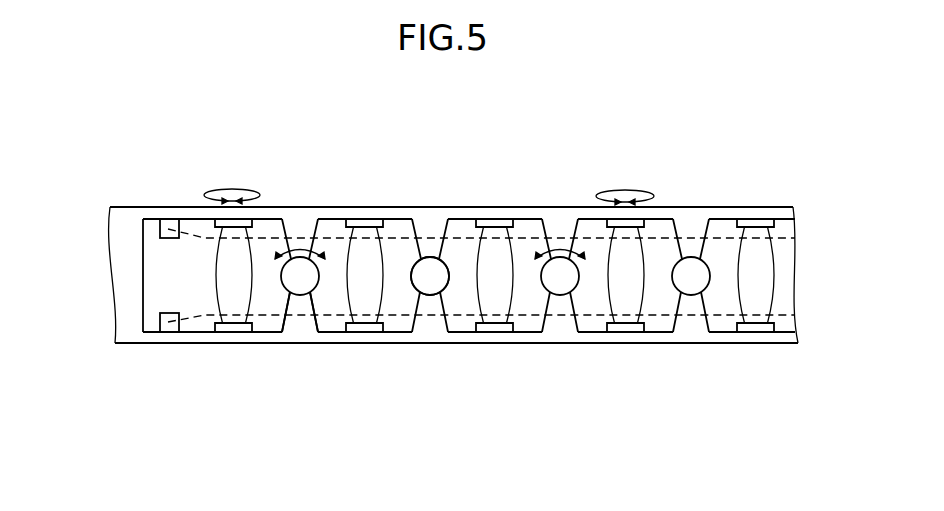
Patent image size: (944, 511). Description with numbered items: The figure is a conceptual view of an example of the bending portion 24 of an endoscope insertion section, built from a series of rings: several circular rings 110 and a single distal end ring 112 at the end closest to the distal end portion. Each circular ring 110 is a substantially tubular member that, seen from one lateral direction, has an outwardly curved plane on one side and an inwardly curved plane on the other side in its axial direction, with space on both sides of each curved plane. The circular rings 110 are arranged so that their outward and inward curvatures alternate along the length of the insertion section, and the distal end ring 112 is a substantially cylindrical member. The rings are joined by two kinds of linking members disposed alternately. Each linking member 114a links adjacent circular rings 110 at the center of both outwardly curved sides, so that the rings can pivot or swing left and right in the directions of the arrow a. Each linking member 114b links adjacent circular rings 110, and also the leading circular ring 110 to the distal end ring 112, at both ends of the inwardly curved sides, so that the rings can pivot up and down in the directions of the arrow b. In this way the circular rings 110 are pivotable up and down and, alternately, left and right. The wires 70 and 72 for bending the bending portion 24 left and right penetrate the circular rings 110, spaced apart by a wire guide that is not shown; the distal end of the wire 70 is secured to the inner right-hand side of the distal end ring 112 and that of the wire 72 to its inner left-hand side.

The bending portion 24 is at (453, 312).
The wire 70 is at (428, 240).
The wire 72 is at (302, 315).
The circular ring 110 is at (333, 229).
The distal end ring 112 is at (194, 325).
The linking member 114a is at (432, 286).
The linking member 114b is at (500, 224).
The arrow a is at (296, 242).
The arrow b is at (232, 189).